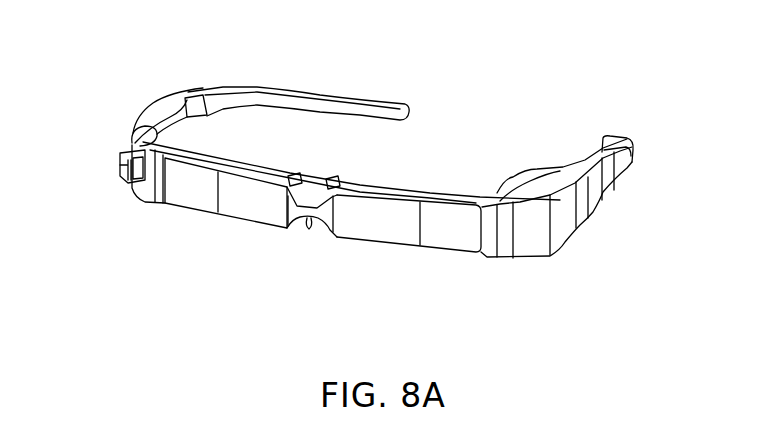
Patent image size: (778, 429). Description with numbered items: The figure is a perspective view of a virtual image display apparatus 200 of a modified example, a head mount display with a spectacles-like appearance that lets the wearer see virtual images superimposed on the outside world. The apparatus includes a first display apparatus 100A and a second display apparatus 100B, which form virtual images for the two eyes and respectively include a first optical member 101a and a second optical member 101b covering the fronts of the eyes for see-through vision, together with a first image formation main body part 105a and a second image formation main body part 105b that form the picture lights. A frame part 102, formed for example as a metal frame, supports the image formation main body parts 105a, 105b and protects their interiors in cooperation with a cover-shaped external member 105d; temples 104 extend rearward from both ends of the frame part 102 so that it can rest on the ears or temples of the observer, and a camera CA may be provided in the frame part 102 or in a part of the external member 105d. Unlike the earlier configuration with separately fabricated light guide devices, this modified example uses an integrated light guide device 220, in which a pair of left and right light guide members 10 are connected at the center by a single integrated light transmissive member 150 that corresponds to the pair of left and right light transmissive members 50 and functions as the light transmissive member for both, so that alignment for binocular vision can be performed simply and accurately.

The virtual image display apparatus 200 is at (553, 53).
The light guide member 10 is at (341, 257).
The light transmissive member 50 is at (358, 277).
The first display apparatus 100A is at (242, 233).
The second display apparatus 100B is at (470, 267).
The first optical member 101a is at (222, 237).
The second optical member 101b is at (431, 263).
The frame part 102 is at (306, 172).
The temple 104 is at (272, 100).
The first image formation main body part 105a is at (156, 192).
The second image formation main body part 105b is at (588, 203).
The external member 105d is at (168, 115).
The integrated light transmissive member 150 is at (312, 271).
The integrated light guide device 220 is at (291, 309).
The camera CA is at (120, 173).